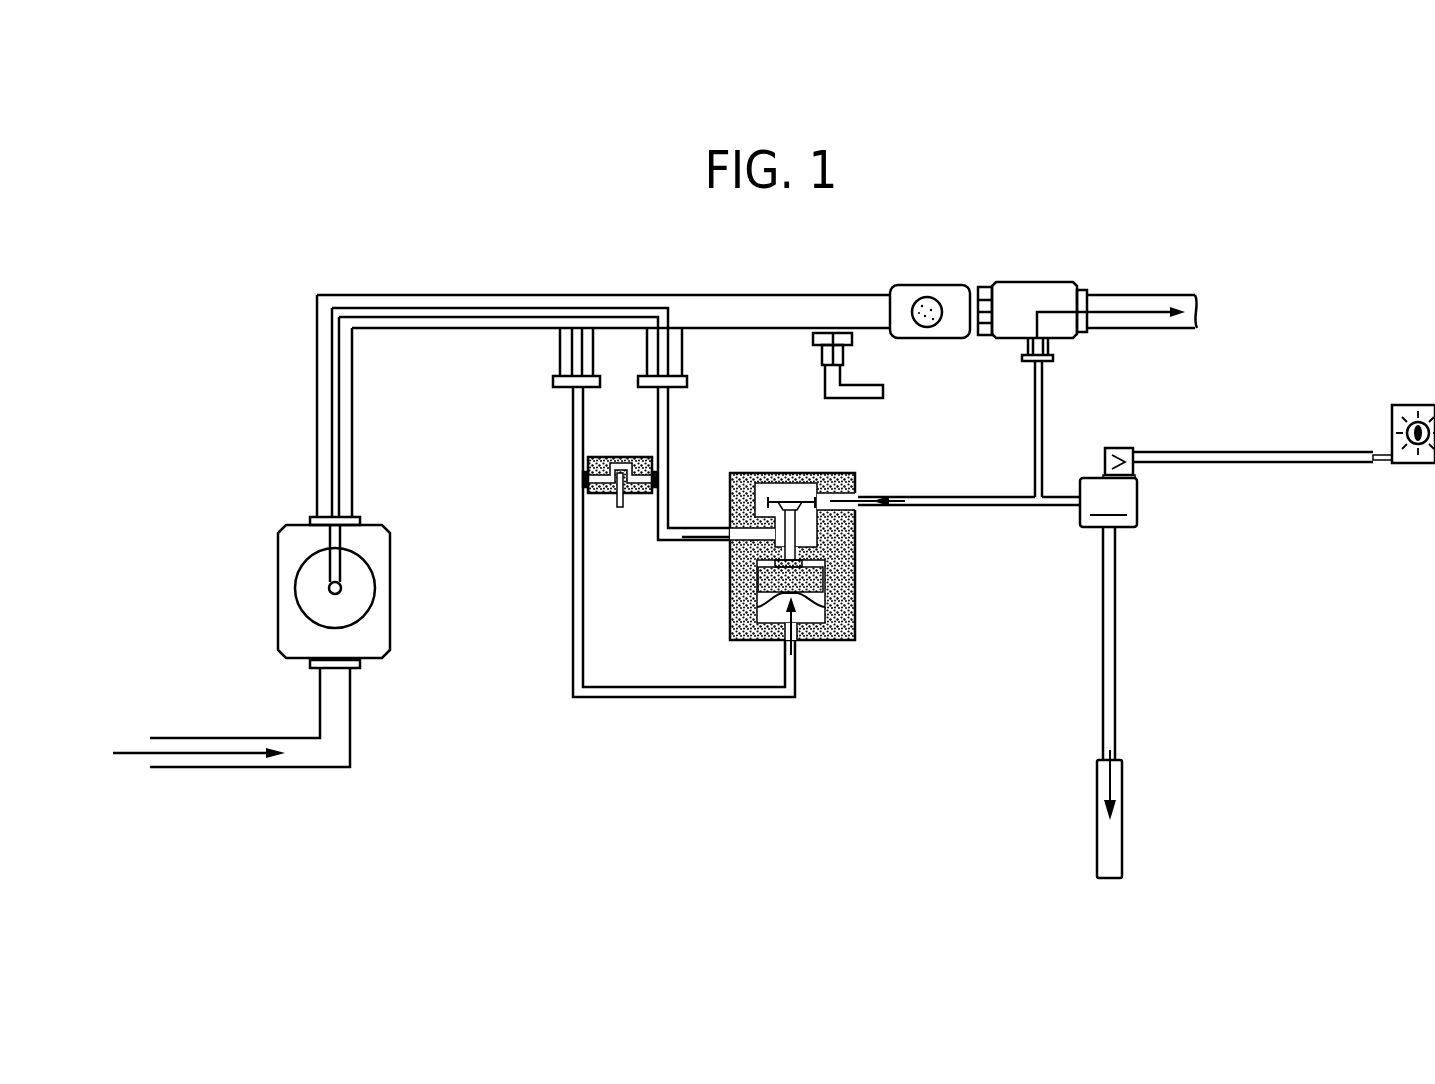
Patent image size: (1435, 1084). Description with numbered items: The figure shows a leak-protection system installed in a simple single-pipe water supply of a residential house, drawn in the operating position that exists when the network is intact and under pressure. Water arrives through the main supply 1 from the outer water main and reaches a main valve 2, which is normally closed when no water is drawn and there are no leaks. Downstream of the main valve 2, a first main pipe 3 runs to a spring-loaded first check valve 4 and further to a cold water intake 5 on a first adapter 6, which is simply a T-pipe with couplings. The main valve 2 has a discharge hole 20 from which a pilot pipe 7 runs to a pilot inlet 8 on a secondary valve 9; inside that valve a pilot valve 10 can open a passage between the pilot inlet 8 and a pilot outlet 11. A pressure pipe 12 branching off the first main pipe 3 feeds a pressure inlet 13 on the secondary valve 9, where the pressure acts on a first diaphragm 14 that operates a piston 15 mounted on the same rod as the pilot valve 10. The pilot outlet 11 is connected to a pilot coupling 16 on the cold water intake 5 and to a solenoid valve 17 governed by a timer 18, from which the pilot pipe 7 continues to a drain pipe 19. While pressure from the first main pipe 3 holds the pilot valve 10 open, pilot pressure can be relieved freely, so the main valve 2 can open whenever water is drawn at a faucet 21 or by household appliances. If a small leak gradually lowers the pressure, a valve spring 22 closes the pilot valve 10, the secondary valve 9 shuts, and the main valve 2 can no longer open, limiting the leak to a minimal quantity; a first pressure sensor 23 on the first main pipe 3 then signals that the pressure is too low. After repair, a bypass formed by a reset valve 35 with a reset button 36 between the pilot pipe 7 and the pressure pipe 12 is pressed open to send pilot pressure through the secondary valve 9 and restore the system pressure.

The main supply 1 is at (335, 768).
The main valve 2 is at (278, 605).
The first main pipe 3 is at (318, 465).
The first check valve 4 is at (930, 285).
The cold water intake 5 is at (980, 287).
The first adapter 6 is at (1040, 282).
The pilot pipe 7 is at (468, 308).
The pilot inlet 8 is at (732, 545).
The secondary valve 9 is at (765, 473).
The pilot valve 10 is at (840, 512).
The pilot outlet 11 is at (830, 546).
The pressure pipe 12 is at (573, 663).
The pressure inlet 13 is at (800, 655).
The first diaphragm 14 is at (853, 617).
The piston 15 is at (853, 583).
The pilot coupling 16 is at (1055, 350).
The solenoid valve 17 is at (1137, 500).
The timer 18 is at (1376, 425).
The drain pipe 19 is at (1122, 778).
The discharge hole 20 is at (341, 590).
The faucet 21 is at (1192, 340).
The valve spring 22 is at (793, 478).
The first pressure sensor 23 is at (812, 358).
The reset valve 35 is at (618, 455).
The reset button 36 is at (617, 508).